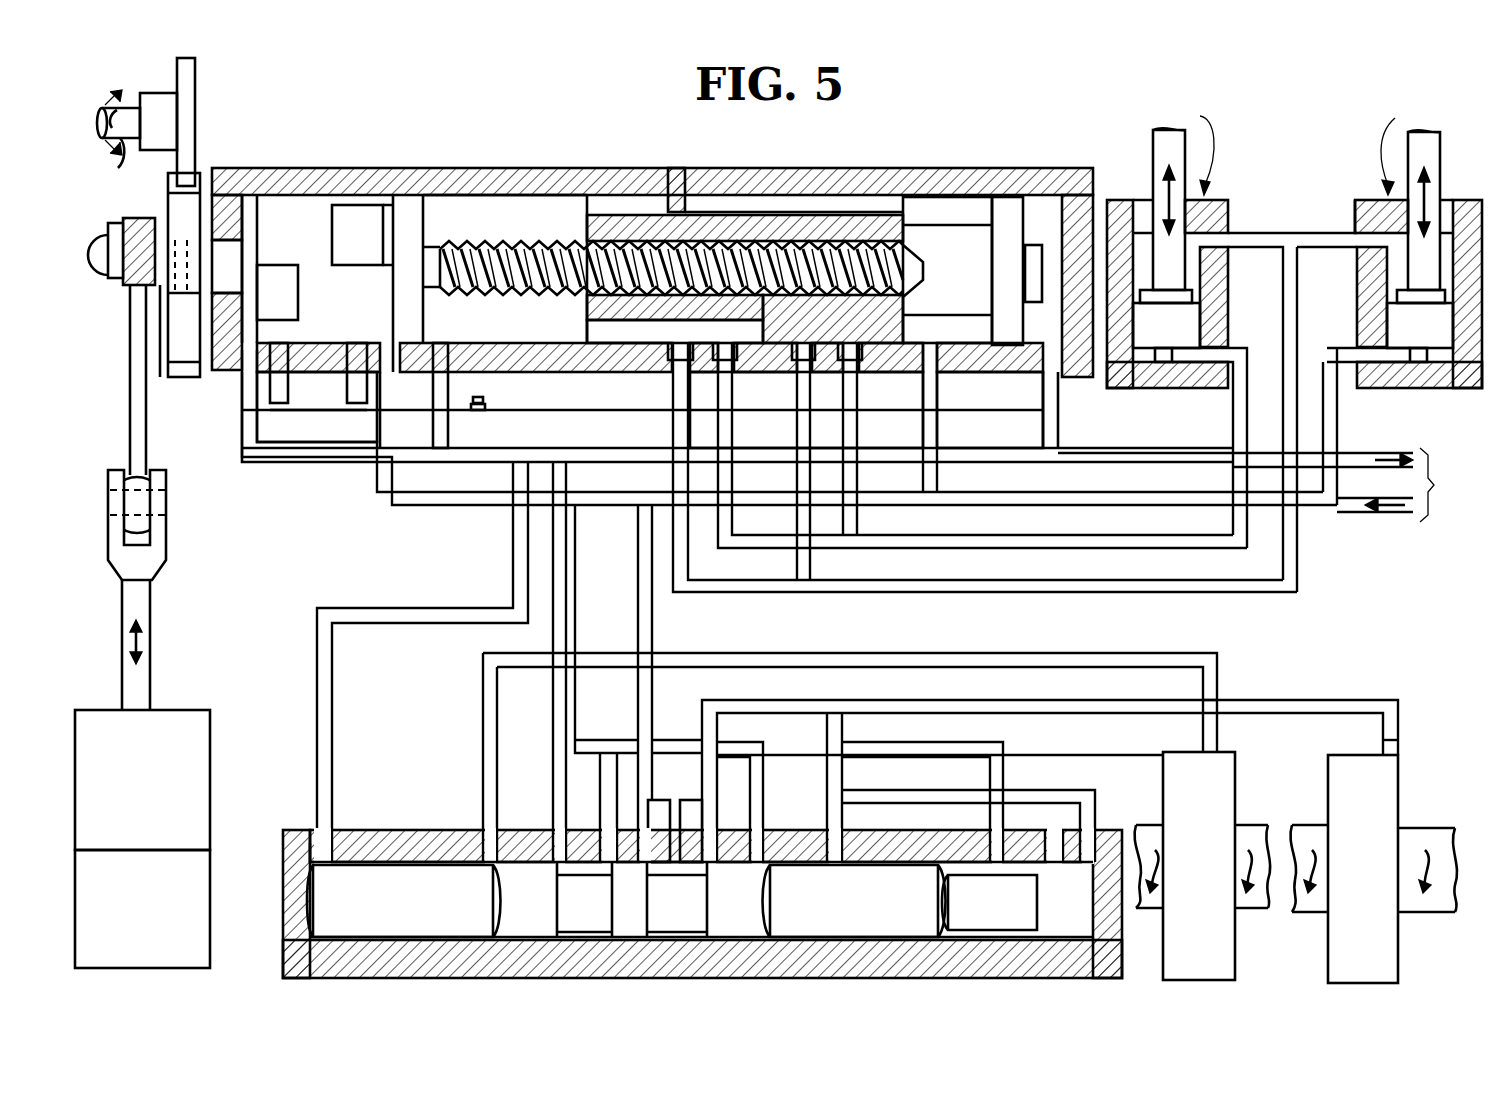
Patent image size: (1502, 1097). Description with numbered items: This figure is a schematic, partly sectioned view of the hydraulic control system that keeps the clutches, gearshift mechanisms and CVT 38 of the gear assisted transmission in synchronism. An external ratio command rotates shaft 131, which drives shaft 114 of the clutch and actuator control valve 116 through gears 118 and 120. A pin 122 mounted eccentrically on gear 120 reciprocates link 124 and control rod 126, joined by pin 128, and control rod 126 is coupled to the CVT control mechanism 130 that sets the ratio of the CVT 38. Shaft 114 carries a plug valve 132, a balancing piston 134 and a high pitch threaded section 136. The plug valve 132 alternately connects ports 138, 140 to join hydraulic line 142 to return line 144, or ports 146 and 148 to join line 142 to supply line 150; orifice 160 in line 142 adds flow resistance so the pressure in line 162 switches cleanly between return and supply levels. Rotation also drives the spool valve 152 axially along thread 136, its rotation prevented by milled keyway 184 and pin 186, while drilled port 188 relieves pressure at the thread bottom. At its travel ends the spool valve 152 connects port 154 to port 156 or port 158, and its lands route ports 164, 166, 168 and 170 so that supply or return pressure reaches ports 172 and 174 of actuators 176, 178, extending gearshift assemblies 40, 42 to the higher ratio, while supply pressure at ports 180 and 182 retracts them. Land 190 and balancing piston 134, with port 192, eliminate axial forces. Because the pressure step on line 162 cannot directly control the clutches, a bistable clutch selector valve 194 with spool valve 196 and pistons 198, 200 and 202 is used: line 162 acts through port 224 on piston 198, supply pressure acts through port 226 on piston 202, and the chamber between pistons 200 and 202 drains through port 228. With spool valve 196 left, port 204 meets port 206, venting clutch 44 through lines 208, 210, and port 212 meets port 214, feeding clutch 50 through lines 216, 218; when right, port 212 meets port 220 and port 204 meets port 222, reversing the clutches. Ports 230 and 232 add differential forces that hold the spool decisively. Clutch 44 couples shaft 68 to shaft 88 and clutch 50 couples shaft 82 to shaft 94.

The continuously variable transmission (CVT) 38 is at (210, 868).
The gearshift assembly 40 is at (1146, 214).
The gearshift assembly 42 is at (1389, 214).
The clutch assembly 44 is at (1222, 772).
The clutch assembly 50 is at (1398, 772).
The shaft 68 is at (1148, 912).
The shaft 82 is at (1308, 915).
The shaft 88 is at (1248, 908).
The shaft 94 is at (1425, 918).
The shaft 114 is at (227, 258).
The clutch and actuator control valve 116 is at (262, 168).
The gear 118 is at (197, 85).
The gear 120 is at (166, 202).
The pin 122 is at (128, 278).
The link 124 is at (146, 405).
The control rod 126 is at (152, 615).
The pin 128 is at (168, 512).
The CVT control mechanism 130 is at (195, 697).
The shaft 131 is at (135, 140).
The plug valve 132 is at (312, 238).
The balancing piston 134 is at (432, 200).
The threaded section 136 is at (560, 235).
The port 138 is at (250, 400).
The port 140 is at (282, 340).
The hydraulic line 142 is at (305, 405).
The fluid return line 144 is at (1352, 452).
The port 146 is at (356, 343).
The port 148 is at (400, 325).
The supply line 150 is at (1352, 525).
The spool valve 152 is at (588, 310).
The port 154 is at (745, 408).
The port 156 is at (437, 350).
The port 158 is at (940, 412).
The orifice 160 is at (480, 398).
The line 162 is at (450, 612).
The port 164 is at (672, 388).
The port 166 is at (812, 405).
The port 168 is at (722, 380).
The port 170 is at (845, 432).
The port 172 is at (1240, 360).
The port 174 is at (1328, 360).
The actuator 176 is at (1118, 200).
The actuator 178 is at (1458, 200).
The port 180 is at (1245, 237).
The port 182 is at (1340, 235).
The milled keyway 184 is at (800, 207).
The pin 186 is at (690, 168).
The drilled port 188 is at (905, 180).
The land 190 is at (1032, 215).
The port 192 is at (1058, 432).
The bistable clutch selector valve 194 is at (1060, 815).
The spool valve 196 is at (605, 911).
The piston 198 is at (320, 903).
The piston 200 is at (895, 875).
The piston 202 is at (1005, 875).
The port 204 is at (600, 667).
The port 206 is at (562, 818).
The line 208 is at (1160, 660).
The line 210 is at (1218, 695).
The port 212 is at (712, 712).
The port 214 is at (680, 812).
The line 216 is at (975, 708).
The line 218 is at (1368, 695).
The port 220 is at (760, 775).
The port 222 is at (645, 722).
The port 224 is at (332, 778).
The port 226 is at (1090, 805).
The port 228 is at (993, 775).
The port 230 is at (842, 770).
The port 232 is at (485, 812).